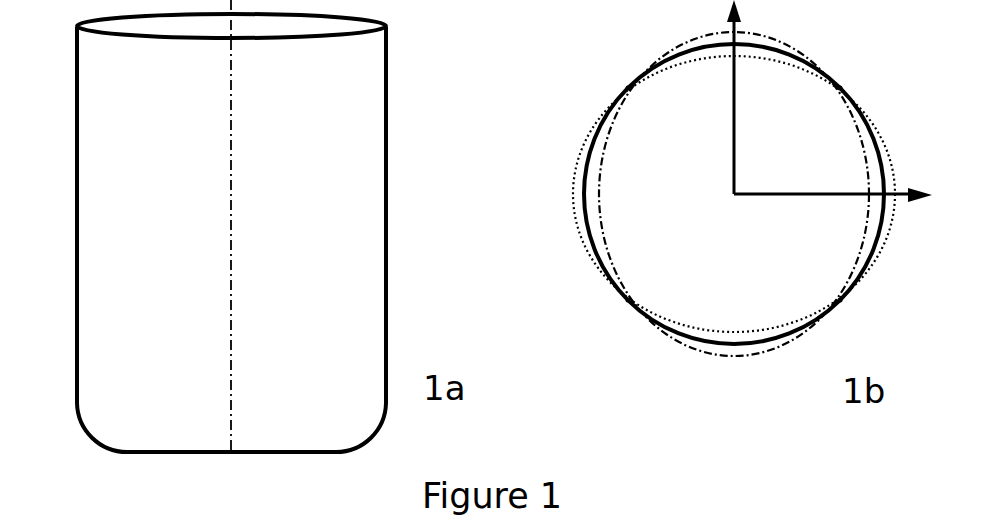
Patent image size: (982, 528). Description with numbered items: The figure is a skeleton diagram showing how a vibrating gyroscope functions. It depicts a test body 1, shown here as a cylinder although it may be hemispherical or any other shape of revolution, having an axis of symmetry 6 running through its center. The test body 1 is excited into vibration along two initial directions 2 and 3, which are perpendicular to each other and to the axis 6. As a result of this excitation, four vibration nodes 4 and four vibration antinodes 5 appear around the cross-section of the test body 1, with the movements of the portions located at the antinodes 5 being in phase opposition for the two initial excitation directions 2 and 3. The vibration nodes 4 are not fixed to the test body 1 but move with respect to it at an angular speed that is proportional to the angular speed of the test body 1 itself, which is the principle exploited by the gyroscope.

The test body 1 is at (386, 113).
The first initial direction 2 is at (733, 28).
The second initial direction 3 is at (896, 192).
The vibration nodes 4 is at (625, 88).
The vibration antinodes 5 is at (740, 32).
The axis of symmetry 6 is at (733, 195).